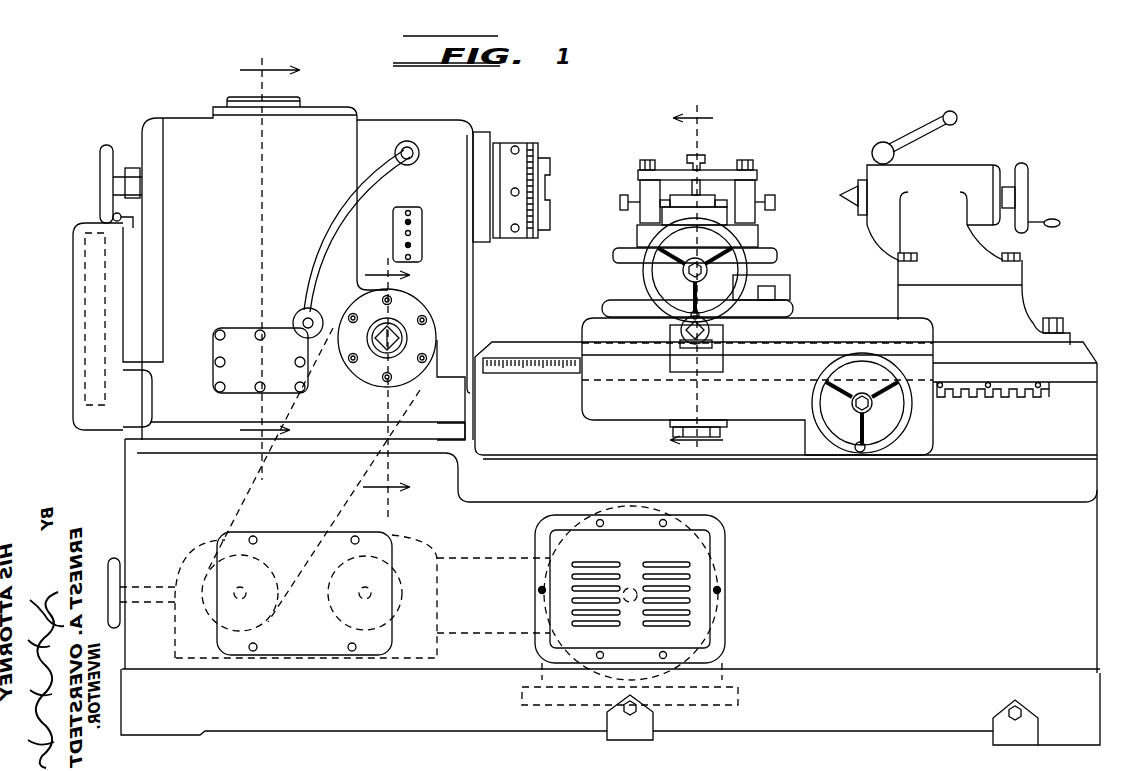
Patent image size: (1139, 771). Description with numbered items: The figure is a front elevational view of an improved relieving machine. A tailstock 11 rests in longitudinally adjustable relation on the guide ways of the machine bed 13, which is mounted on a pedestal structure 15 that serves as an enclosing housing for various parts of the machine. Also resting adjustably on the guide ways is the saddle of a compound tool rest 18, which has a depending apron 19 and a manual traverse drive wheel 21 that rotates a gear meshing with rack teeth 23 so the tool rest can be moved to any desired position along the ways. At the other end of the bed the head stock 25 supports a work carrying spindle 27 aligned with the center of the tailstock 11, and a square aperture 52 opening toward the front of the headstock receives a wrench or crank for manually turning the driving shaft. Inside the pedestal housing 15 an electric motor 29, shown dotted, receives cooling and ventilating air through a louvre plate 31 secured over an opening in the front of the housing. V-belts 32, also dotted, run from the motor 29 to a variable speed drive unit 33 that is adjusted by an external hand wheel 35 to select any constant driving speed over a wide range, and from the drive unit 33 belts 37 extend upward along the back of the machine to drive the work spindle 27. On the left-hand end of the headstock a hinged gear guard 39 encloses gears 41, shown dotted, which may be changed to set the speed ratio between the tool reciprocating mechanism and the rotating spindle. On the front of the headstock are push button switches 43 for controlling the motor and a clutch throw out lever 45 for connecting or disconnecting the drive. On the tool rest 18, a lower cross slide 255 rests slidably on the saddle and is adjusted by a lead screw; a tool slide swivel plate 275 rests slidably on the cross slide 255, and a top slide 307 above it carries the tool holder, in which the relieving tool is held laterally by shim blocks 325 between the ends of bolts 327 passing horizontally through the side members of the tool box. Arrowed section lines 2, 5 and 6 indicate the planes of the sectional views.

The section line 2- 2 is at (270, 258).
The section line 5- 5 is at (386, 382).
The section line 6- 6 is at (696, 287).
The tailstock 11 is at (943, 222).
The machine bed 13 is at (1097, 400).
The pedestal structure 15 is at (1072, 550).
The compound tool rest 18 is at (806, 236).
The depending apron 19 is at (585, 398).
The manual traverse drive wheel 21 is at (818, 437).
The rack teeth 23 is at (972, 397).
The head stock 25 is at (470, 243).
The work carrying spindle 27 is at (500, 237).
The electric motor 29 is at (700, 510).
The louvre plate 31 is at (700, 615).
The V-belts 32 is at (520, 557).
The variable speed drive unit 33 is at (430, 615).
The external hand wheel 35 is at (118, 562).
The belts 37 is at (343, 478).
The gear guard 39 is at (76, 292).
The gears 41 is at (92, 296).
The push button switches 43 is at (424, 215).
The clutch throw out lever 45 is at (350, 196).
The square aperture 52 is at (396, 332).
The lower cross slide 255 is at (790, 298).
The tool slide swivel plate 275 is at (760, 297).
The top slide 307 is at (100, 178).
The shim blocks 325 is at (677, 196).
The bolts 327 is at (626, 205).